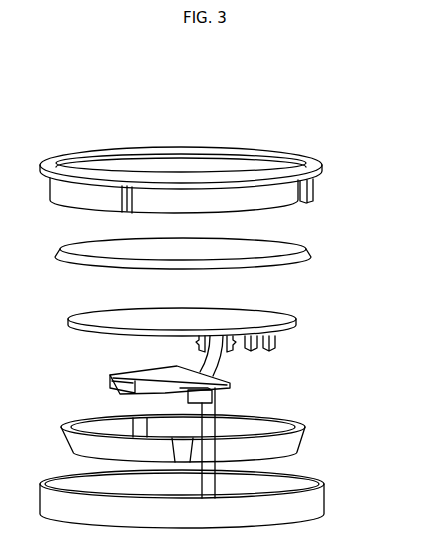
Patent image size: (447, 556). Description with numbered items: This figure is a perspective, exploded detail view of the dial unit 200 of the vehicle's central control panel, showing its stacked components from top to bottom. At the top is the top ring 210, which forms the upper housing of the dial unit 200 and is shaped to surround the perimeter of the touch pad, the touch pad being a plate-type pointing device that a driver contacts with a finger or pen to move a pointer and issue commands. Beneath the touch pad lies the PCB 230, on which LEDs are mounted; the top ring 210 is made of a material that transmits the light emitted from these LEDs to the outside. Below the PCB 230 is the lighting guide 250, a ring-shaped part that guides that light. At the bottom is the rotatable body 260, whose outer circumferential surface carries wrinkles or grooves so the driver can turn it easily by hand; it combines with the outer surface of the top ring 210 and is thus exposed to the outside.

The dial unit 200 is at (56, 116).
The top ring 210 is at (313, 164).
The PCB 230 is at (298, 320).
The lighting guide 250 is at (304, 440).
The rotatable body 260 is at (314, 503).